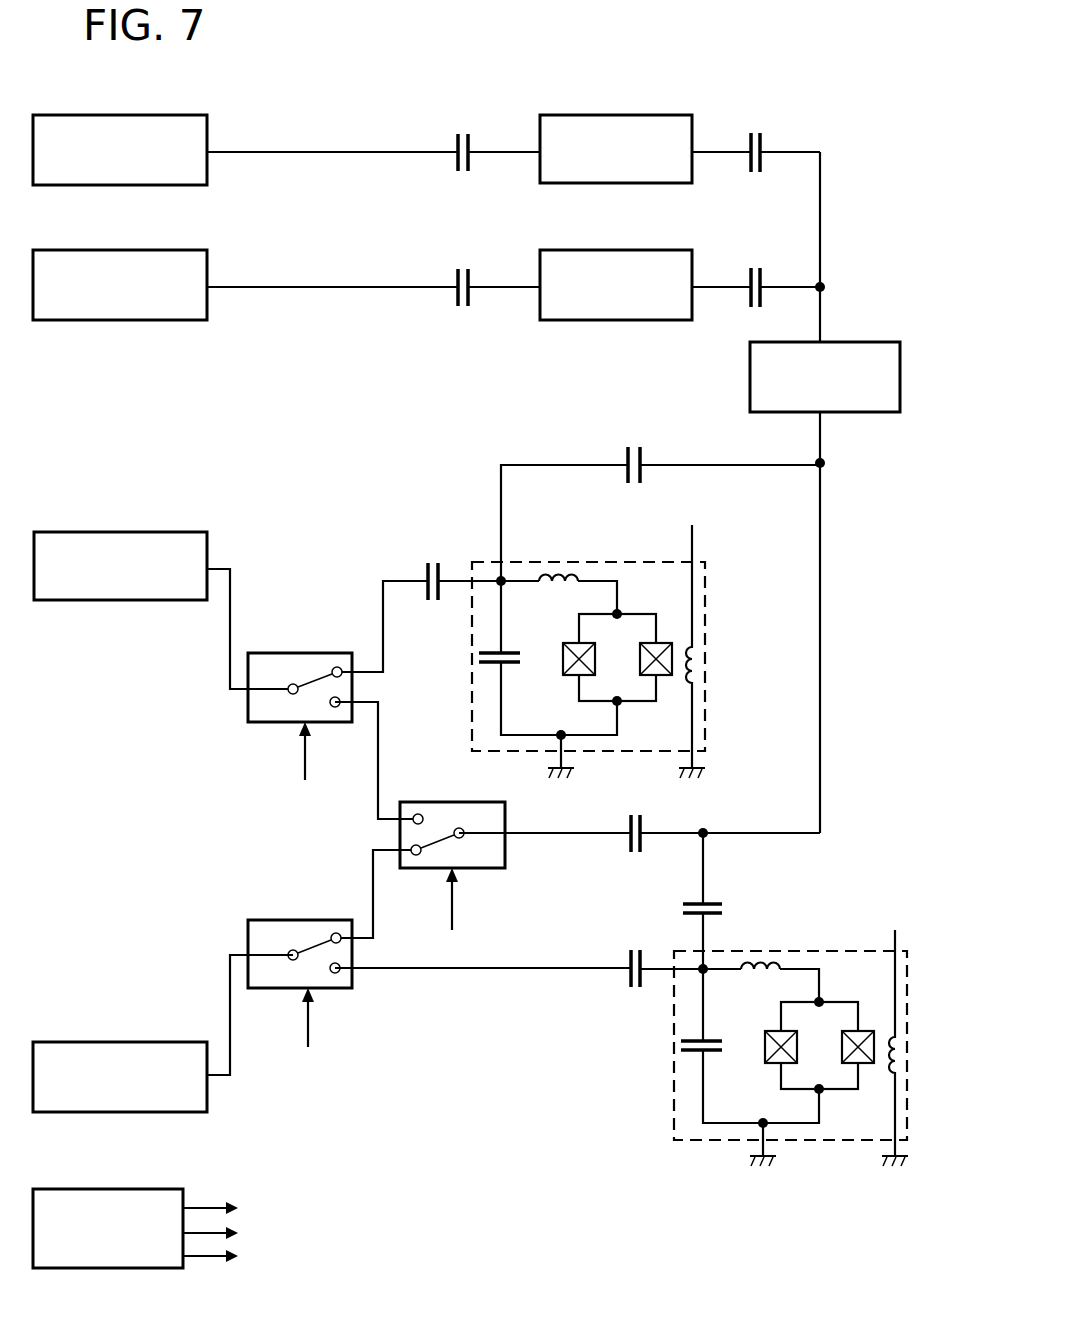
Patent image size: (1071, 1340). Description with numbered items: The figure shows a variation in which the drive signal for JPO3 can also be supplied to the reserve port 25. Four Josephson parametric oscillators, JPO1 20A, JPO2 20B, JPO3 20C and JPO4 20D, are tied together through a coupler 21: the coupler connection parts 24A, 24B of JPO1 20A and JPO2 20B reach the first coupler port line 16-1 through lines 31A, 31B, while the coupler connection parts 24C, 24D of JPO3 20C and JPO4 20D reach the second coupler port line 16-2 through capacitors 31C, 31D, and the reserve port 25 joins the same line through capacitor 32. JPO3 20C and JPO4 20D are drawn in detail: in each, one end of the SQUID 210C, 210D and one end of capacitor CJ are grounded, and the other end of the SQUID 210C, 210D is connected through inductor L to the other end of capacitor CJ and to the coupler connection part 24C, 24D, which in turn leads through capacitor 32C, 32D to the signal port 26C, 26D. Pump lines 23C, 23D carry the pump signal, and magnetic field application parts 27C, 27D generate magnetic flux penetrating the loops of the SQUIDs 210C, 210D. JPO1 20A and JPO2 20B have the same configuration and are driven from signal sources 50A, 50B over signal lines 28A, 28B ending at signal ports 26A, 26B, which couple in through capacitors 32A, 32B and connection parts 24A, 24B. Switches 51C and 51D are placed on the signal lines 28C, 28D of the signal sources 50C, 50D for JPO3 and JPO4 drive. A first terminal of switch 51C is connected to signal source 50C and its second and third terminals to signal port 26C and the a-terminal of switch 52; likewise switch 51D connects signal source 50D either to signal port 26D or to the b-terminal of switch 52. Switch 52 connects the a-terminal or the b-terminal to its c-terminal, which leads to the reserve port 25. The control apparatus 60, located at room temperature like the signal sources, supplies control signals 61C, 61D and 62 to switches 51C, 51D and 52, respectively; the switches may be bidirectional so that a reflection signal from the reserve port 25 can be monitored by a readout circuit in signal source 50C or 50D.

The signal source 50A is at (120, 129).
The signal source 50B is at (120, 264).
The signal source 50C is at (120, 545).
The signal source 50D is at (120, 1056).
The signal line 28A is at (332, 130).
The signal line 28B is at (332, 265).
The signal line 28C is at (317, 625).
The signal line 28D is at (307, 1042).
The capacitor 32A is at (490, 136).
The capacitor 32B is at (489, 271).
The capacitor 32C is at (459, 562).
The capacitor 32D is at (664, 954).
The capacitor 32 is at (725, 820).
The signal port 26A is at (457, 179).
The signal port 26B is at (452, 316).
The signal port 26C is at (385, 551).
The signal port 26D is at (492, 1000).
The reserve port 25 is at (575, 864).
The JPO1 20A is at (616, 149).
The JPO2 20B is at (616, 285).
The JPO3 20C is at (576, 657).
The JPO4 20D is at (777, 1046).
The coupler connection part 24A is at (731, 138).
The coupler connection part 24B is at (727, 274).
The coupler connection part 24C is at (564, 502).
The coupler connection part 24D is at (705, 940).
The line 31A is at (790, 124).
The line 31B is at (790, 260).
The capacitor 31C is at (724, 449).
The capacitor 31D is at (734, 901).
The coupler port line 16-1 is at (851, 247).
The coupler port line 16-2 is at (855, 440).
The coupler 21 is at (847, 377).
The pump line 23C is at (615, 634).
The pump line 23D is at (818, 1023).
The SQUID 210C is at (623, 612).
The SQUID 210D is at (825, 1000).
The magnetic field application part 27C is at (719, 651).
The magnetic field application part 27D is at (921, 1048).
The switch 51C is at (300, 667).
The switch 51D is at (300, 932).
The switch 52 is at (452, 814).
The control signal 61C is at (275, 981).
The control signal 61D is at (277, 1102).
The control signal 62 is at (341, 1065).
The control apparatus 60 is at (108, 1206).